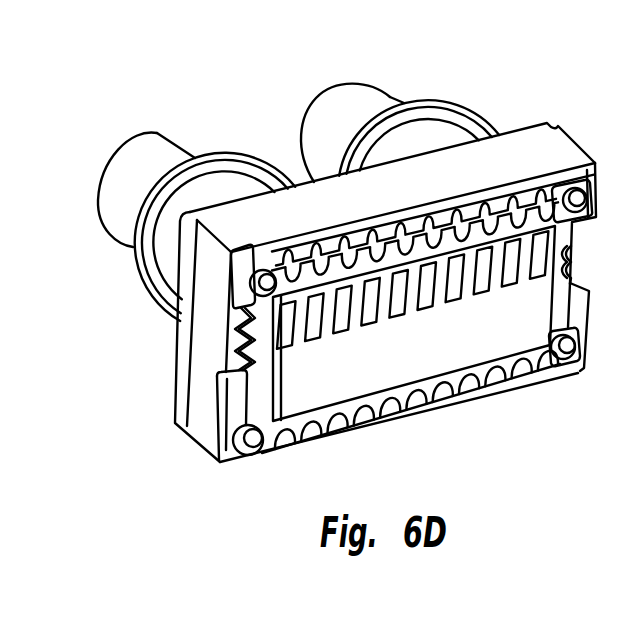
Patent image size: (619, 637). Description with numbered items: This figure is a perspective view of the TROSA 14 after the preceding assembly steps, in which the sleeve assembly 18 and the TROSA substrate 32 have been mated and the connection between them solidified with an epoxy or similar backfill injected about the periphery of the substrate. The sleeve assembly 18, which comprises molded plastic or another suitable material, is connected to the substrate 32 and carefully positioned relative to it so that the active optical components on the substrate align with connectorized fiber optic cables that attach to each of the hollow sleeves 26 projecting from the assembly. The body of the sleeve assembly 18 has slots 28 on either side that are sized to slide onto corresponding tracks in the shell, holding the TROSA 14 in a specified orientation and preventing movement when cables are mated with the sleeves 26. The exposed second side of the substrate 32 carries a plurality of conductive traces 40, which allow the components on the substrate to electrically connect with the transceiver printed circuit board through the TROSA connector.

The transmitter/receiver optical subassembly (TROSA) 14 is at (79, 164).
The sleeve assembly 18 is at (502, 155).
The hollow sleeves 26 is at (315, 122).
The slots 28 is at (217, 362).
The TROSA substrate 32 is at (258, 313).
The conductive traces 40 is at (460, 295).